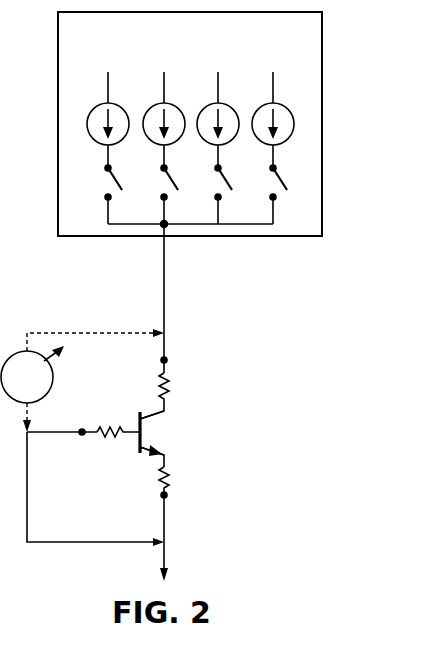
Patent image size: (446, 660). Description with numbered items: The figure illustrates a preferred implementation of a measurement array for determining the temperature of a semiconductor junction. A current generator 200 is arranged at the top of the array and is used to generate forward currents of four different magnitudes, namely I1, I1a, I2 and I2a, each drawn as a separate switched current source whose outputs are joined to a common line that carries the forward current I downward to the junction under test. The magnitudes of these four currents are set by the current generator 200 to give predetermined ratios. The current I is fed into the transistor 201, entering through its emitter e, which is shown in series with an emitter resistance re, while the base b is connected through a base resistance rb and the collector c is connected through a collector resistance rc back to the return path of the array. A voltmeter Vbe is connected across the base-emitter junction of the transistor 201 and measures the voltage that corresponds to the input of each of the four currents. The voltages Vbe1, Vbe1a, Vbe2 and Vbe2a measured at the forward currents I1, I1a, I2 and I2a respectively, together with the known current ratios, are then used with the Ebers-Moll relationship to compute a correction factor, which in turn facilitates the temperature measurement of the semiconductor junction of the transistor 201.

The current generator 200 is at (161, 124).
The transistor 201 is at (138, 447).
The forward current I1 is at (102, 148).
The forward current I1a is at (155, 148).
The forward current I2 is at (212, 148).
The forward current I2a is at (265, 148).
The forward current I is at (174, 292).
The base-emitter voltage Vbe is at (82, 380).
The base node b is at (62, 445).
The emitter node e is at (176, 372).
The collector node c is at (175, 532).
The base resistance rb is at (118, 415).
The emitter resistance re is at (151, 396).
The collector resistance rc is at (152, 482).